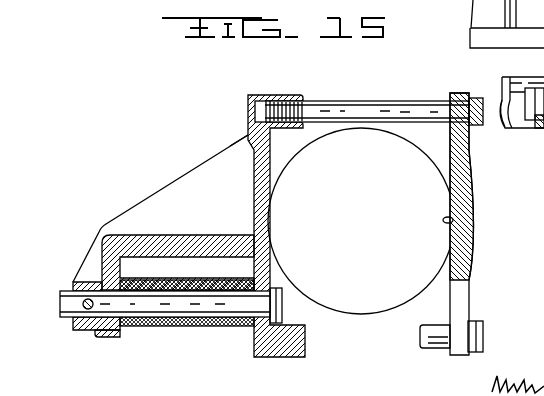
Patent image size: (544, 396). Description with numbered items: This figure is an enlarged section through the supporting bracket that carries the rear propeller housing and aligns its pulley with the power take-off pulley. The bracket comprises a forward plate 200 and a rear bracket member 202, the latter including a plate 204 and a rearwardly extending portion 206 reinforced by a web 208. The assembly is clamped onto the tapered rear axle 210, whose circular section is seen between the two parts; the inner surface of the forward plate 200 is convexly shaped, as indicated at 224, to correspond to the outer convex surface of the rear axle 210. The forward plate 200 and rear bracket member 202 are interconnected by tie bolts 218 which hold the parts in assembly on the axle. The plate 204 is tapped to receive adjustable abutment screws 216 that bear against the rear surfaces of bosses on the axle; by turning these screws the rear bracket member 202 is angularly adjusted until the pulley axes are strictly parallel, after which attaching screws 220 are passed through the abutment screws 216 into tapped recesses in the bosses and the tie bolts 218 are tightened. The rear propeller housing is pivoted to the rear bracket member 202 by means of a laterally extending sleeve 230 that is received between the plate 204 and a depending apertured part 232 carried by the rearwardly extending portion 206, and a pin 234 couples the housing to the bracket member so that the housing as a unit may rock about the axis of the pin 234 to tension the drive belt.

The forward plate 200 is at (470, 183).
The rear bracket member 202 is at (169, 182).
The plate 204 is at (263, 163).
The rearwardly extending portion 206 is at (162, 235).
The web 208 is at (226, 157).
The rear axle 210 is at (372, 298).
The adjustable abutment screws 216 is at (442, 343).
The tie bolts 218 is at (396, 108).
The attaching screws 220 is at (506, 104).
The convexly shaped inner surface 224 is at (453, 220).
The laterally extending sleeve 230 is at (204, 326).
The depending apertured part 232 is at (90, 311).
The pin 234 is at (238, 302).